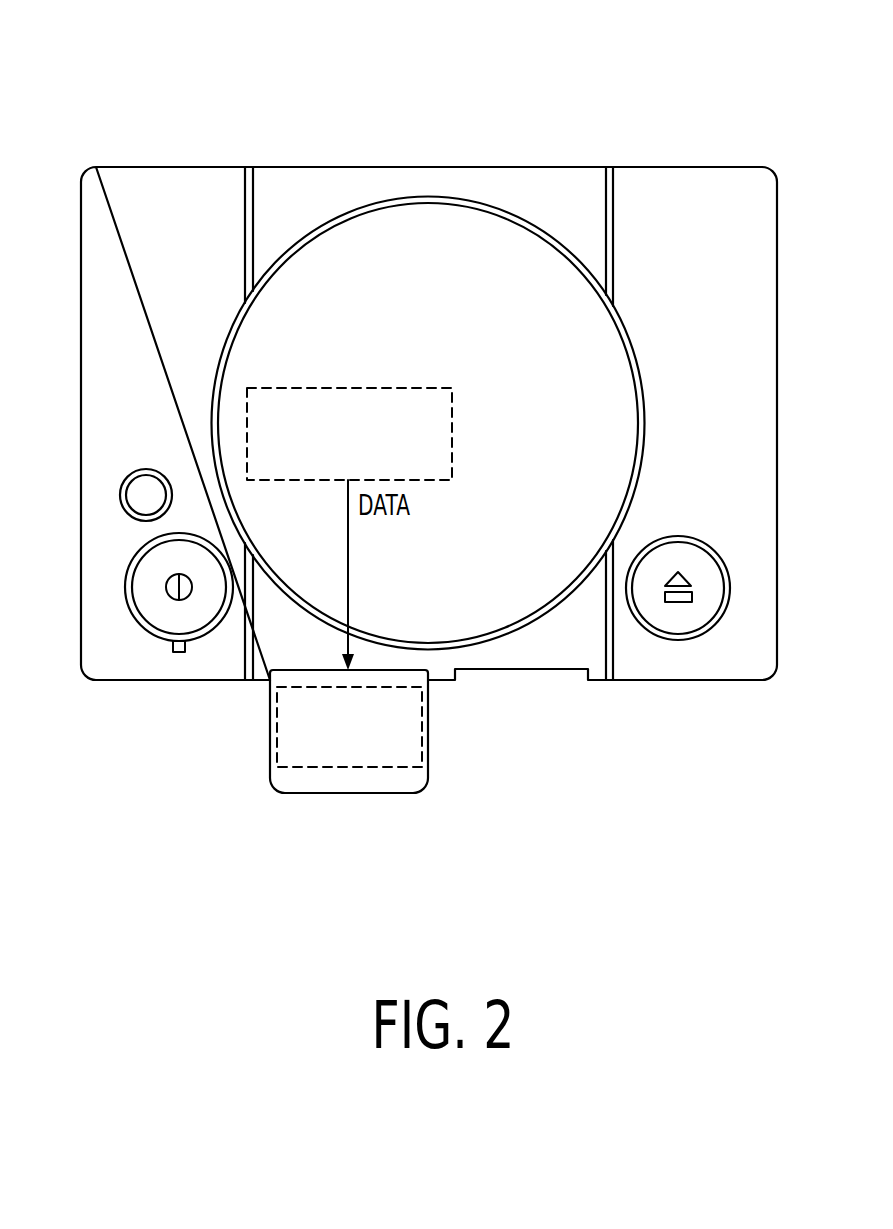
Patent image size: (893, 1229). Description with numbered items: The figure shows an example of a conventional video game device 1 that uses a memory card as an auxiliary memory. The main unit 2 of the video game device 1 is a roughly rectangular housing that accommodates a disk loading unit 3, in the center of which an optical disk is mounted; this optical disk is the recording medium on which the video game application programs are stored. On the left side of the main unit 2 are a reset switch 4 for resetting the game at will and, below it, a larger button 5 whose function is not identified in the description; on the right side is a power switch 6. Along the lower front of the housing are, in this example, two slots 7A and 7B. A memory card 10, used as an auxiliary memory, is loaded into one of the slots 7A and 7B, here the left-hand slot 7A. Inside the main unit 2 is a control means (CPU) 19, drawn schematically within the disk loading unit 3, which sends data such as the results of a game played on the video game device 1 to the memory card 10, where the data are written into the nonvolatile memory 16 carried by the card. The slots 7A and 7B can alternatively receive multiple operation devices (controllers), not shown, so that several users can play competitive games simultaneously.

The video game device 1 is at (656, 142).
The main unit 2 is at (757, 680).
The disk loading unit 3 is at (468, 230).
The reset switch 4 is at (137, 500).
The power switch 5 is at (143, 586).
The power switch 6 is at (708, 580).
The slot 7A is at (268, 681).
The slot 7B is at (590, 681).
The memory card 10 is at (313, 794).
The nonvolatile memory 16 is at (368, 768).
The control means (CPU) 19 is at (453, 435).